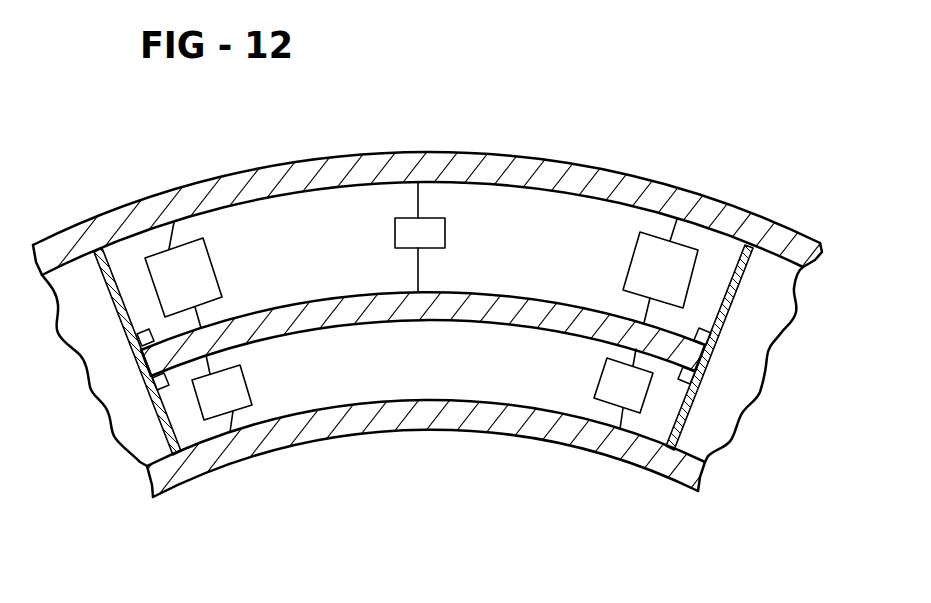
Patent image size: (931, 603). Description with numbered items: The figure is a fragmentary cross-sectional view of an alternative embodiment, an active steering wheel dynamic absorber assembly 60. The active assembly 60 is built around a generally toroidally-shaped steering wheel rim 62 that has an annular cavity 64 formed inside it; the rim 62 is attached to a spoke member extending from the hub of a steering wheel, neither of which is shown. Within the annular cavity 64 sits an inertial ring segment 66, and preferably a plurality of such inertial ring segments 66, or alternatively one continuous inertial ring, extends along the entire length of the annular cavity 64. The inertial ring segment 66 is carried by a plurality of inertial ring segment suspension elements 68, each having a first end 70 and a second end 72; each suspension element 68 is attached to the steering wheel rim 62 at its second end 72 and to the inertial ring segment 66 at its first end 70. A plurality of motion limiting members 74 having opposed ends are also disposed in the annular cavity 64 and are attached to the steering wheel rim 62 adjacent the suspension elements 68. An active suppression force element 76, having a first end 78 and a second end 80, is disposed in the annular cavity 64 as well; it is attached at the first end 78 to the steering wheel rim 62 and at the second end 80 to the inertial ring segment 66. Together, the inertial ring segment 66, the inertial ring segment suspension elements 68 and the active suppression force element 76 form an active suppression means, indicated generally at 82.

The active steering wheel dynamic absorber assembly 60 is at (95, 130).
The steering wheel rim 62 is at (578, 186).
The annular cavity 64 is at (624, 221).
The inertial ring segment 66 is at (490, 305).
The inertial ring segment suspension element 68 is at (190, 405).
The first end 70 is at (212, 303).
The second end 72 is at (187, 241).
The motion limiting member 74 is at (93, 278).
The active suppression force element 76 is at (384, 231).
The first end 78 is at (424, 219).
The second end 80 is at (428, 248).
The active suppression means 82 is at (752, 435).